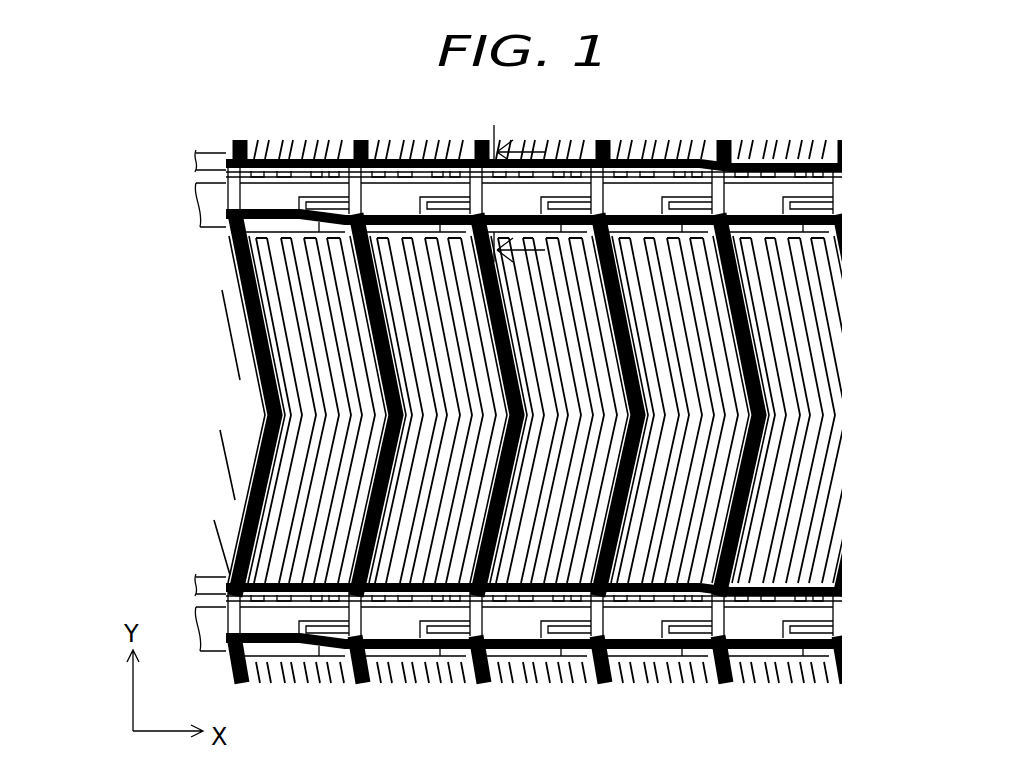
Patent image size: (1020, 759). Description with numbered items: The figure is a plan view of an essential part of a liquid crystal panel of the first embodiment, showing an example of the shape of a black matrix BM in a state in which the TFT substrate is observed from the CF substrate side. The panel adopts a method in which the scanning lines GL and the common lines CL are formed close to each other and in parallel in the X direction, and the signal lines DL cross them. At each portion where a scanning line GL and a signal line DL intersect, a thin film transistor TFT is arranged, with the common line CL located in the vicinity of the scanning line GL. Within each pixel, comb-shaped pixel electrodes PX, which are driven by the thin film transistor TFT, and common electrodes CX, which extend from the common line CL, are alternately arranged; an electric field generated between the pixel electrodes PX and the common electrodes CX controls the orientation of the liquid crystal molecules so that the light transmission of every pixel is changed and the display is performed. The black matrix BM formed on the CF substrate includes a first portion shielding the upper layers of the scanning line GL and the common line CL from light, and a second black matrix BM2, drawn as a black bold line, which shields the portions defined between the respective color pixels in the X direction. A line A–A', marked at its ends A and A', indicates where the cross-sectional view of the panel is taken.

The common line CL is at (212, 158).
The thin film transistor TFT is at (418, 205).
The signal line DL is at (600, 192).
The scanning line GL is at (226, 212).
The pixel electrode PX is at (278, 272).
The common electrode CX is at (268, 335).
The second black matrix BM2 is at (255, 478).
The black matrix BM is at (857, 165).
The section line A is at (520, 135).
The section line A' is at (521, 263).